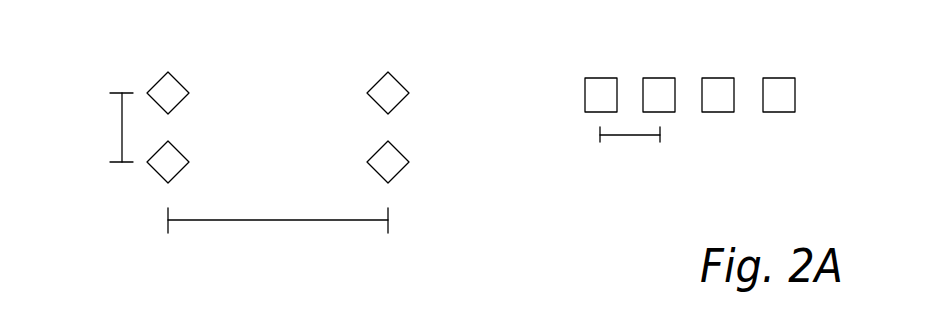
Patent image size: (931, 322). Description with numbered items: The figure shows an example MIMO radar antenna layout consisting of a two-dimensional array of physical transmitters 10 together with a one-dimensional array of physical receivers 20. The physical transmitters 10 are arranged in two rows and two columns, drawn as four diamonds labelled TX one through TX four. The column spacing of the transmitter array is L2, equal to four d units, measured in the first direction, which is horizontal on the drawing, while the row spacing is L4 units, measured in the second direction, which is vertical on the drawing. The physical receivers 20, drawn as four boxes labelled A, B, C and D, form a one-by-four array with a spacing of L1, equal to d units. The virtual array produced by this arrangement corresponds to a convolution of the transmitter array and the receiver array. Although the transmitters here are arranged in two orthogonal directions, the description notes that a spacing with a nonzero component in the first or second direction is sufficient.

The physical transmitters 10 is at (178, 82).
The physical receivers 20 is at (659, 78).
The receiver spacing L1 is at (629, 151).
The column spacing L2 is at (278, 233).
The row spacing L4 is at (106, 127).